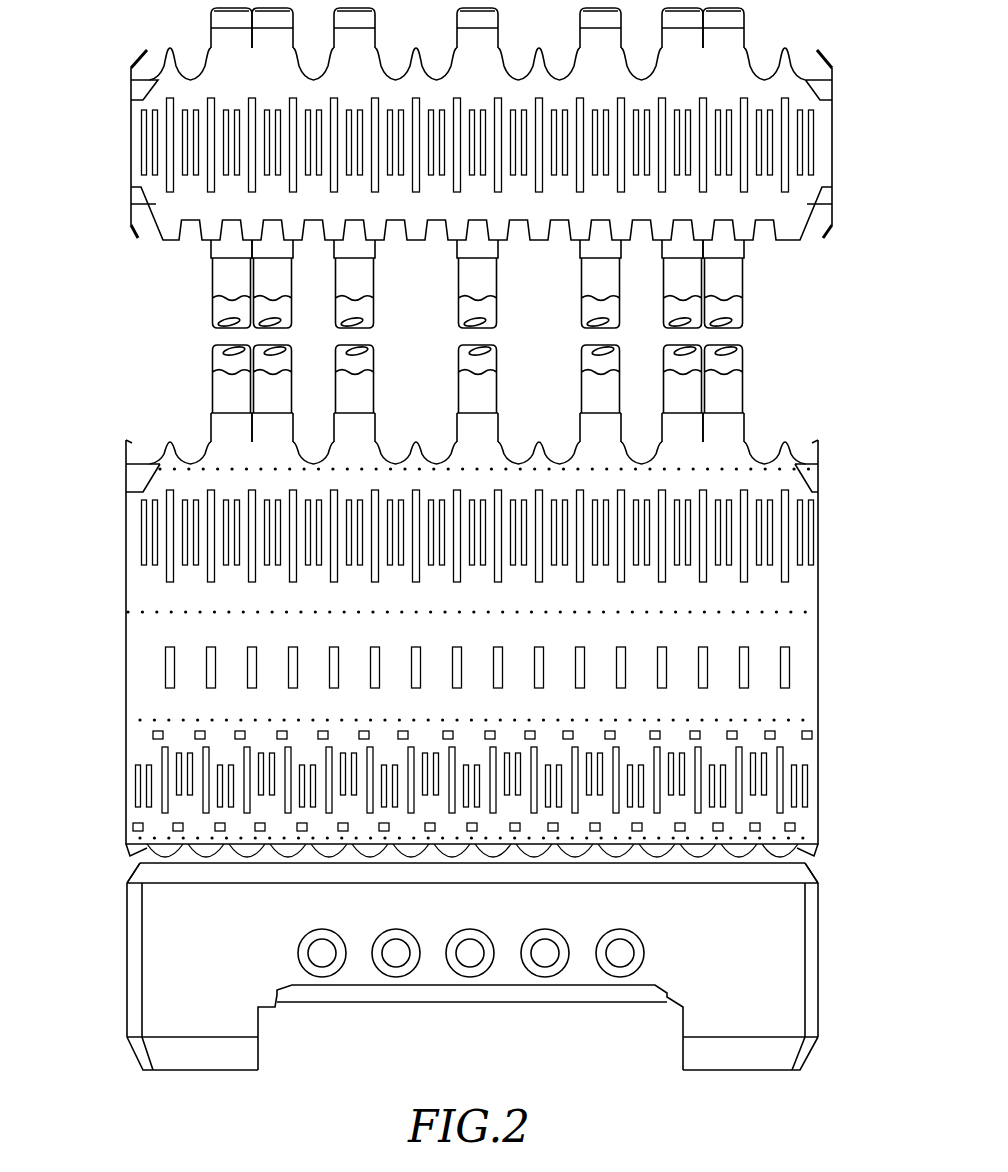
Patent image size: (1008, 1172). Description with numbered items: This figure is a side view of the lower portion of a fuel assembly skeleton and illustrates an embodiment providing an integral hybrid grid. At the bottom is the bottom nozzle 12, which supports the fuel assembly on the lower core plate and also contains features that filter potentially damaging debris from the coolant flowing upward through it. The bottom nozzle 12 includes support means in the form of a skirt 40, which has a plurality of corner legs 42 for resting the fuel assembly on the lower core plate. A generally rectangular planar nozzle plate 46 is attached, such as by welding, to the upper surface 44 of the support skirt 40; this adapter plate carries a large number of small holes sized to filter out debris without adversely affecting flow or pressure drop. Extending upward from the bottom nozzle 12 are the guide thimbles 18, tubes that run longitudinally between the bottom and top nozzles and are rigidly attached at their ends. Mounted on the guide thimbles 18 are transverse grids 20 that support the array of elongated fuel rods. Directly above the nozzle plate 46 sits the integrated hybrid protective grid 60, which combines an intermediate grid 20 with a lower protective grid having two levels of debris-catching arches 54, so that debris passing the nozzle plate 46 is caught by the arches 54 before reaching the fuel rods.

The bottom nozzle 12 is at (456, 763).
The guide thimbles 18 is at (745, 265).
The grid 20 is at (833, 114).
The skirt 40 is at (820, 908).
The corner legs 42 is at (258, 1042).
The upper surface 44 is at (130, 880).
The nozzle plate 46 is at (812, 868).
The debris-catching arches 54 is at (813, 735).
The integrated hybrid protective grid 60 is at (498, 644).